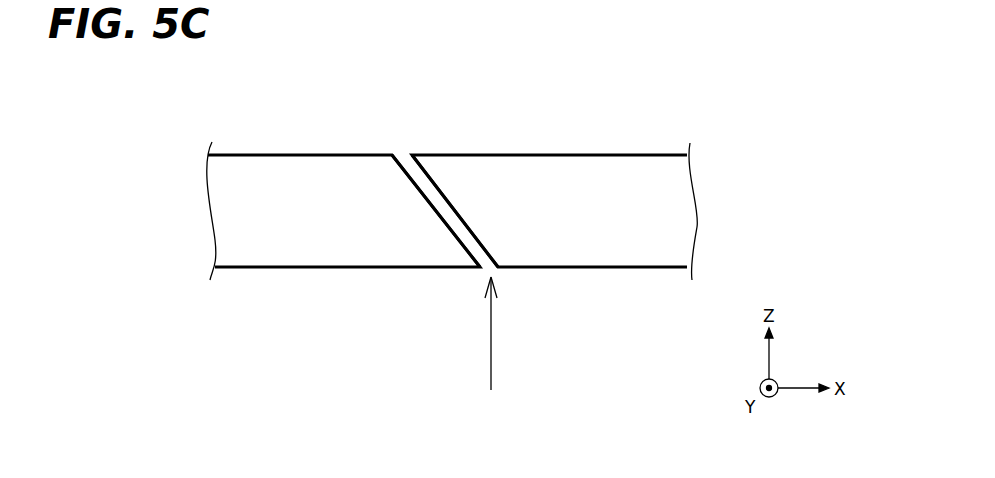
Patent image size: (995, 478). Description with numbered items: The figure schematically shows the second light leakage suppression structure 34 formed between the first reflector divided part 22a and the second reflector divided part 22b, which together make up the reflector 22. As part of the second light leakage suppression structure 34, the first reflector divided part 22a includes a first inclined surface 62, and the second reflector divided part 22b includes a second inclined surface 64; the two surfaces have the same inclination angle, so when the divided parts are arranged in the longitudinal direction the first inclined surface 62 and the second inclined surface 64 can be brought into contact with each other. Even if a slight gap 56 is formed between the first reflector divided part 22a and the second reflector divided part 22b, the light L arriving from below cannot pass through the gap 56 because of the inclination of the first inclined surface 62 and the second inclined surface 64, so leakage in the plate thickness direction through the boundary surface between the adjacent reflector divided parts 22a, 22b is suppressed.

The reflector 22 is at (447, 220).
The first reflector divided part 22a is at (302, 180).
The second reflector divided part 22b is at (642, 182).
The second light leakage suppression structure 34 is at (447, 156).
The first inclined surface 62 is at (427, 199).
The second inclined surface 64 is at (461, 222).
The gap 56 is at (480, 250).
The light L is at (491, 358).